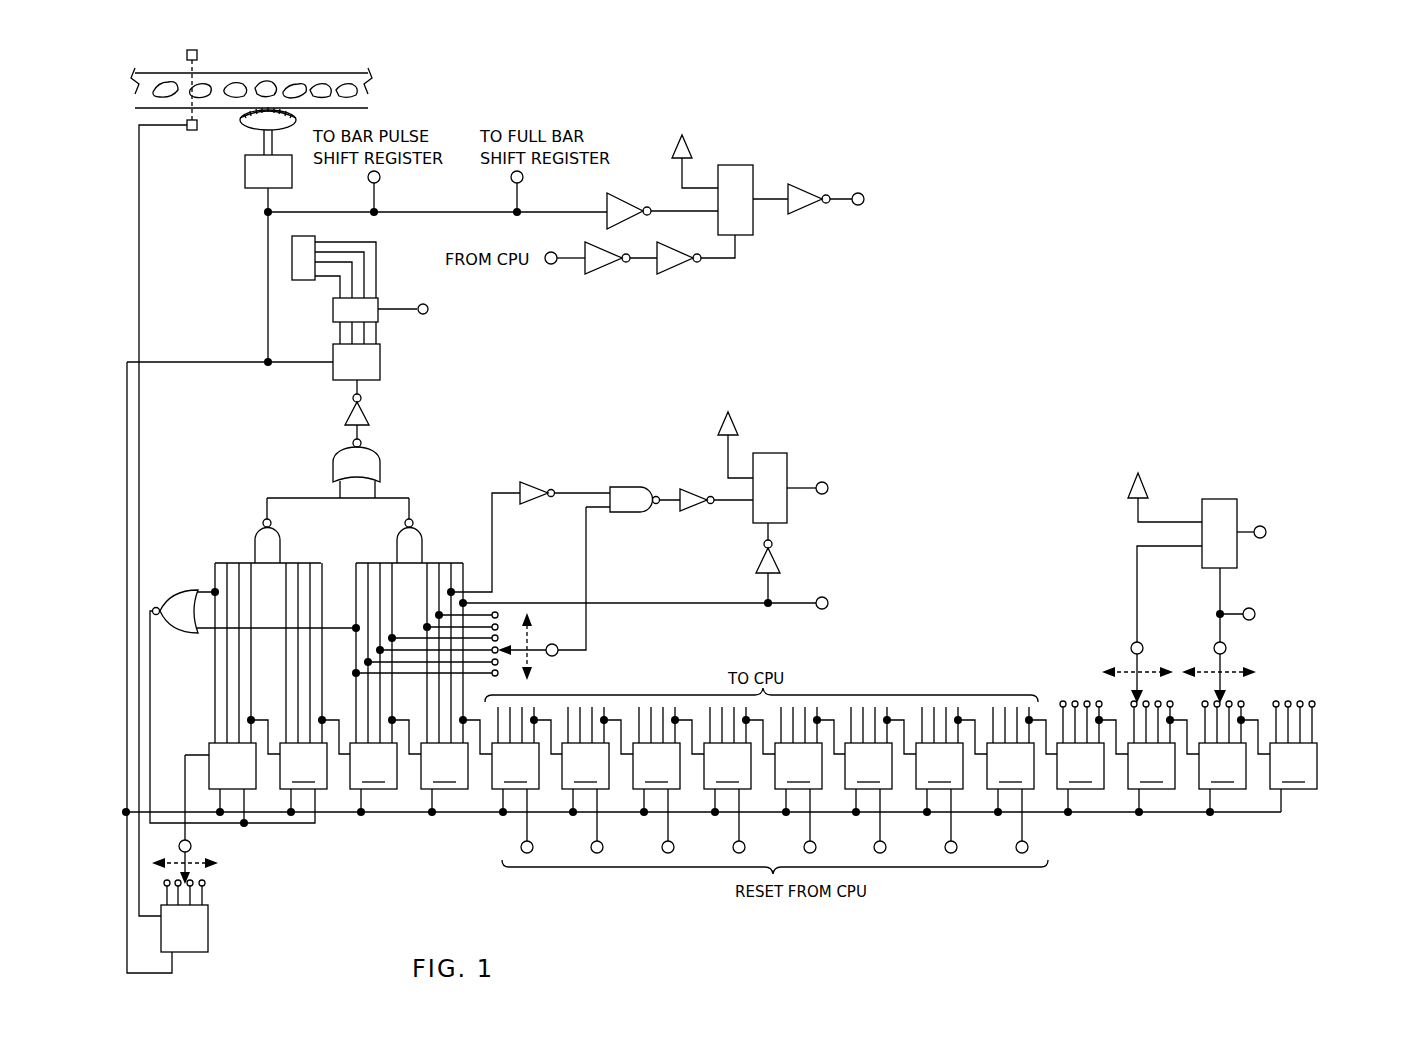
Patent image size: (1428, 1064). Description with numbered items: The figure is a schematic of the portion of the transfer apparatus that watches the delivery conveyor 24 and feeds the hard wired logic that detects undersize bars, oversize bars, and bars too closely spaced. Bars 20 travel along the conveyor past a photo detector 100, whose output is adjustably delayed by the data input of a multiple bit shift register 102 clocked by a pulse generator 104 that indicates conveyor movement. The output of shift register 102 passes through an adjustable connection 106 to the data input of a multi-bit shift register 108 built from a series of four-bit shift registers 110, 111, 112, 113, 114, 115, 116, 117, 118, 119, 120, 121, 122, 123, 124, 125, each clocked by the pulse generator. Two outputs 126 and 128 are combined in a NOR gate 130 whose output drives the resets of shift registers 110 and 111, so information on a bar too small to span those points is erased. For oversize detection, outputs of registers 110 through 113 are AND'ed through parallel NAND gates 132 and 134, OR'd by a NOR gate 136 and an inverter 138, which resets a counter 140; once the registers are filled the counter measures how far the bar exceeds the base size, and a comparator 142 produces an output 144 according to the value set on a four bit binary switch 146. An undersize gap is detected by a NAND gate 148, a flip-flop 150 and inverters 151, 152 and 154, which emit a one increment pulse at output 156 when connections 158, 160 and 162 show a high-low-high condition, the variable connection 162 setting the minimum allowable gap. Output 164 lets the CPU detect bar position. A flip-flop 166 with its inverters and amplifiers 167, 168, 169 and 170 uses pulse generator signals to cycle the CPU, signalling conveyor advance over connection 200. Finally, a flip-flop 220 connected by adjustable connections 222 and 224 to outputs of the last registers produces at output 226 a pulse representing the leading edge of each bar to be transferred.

The bars 20 is at (322, 85).
The delivery conveyor 24 is at (368, 73).
The photo detector 100 is at (194, 130).
The multiple bit shift register 102 is at (210, 928).
The pulse generator 104 is at (292, 178).
The adjustable connection 106 is at (191, 846).
The multi-bit shift register 108 is at (209, 748).
The 4 bit shift register 110 is at (247, 789).
The 4 bit shift register 111 is at (315, 766).
The 4 bit shift register 112 is at (385, 766).
The 4 bit shift register 113 is at (456, 766).
The 4 bit shift register 114 is at (527, 780).
The 4 bit shift register 115 is at (597, 780).
The 4 bit shift register 116 is at (668, 780).
The 4 bit shift register 117 is at (739, 780).
The 4 bit shift register 118 is at (810, 780).
The 4 bit shift register 119 is at (880, 780).
The 4 bit shift register 120 is at (951, 780).
The 4 bit shift register 121 is at (1022, 780).
The 4 bit shift register 122 is at (1092, 758).
The 4 bit shift register 123 is at (1163, 758).
The 4 bit shift register 124 is at (1234, 758).
The 4 bit shift register 125 is at (1293, 756).
The shift register output 126 is at (356, 626).
The shift register output 128 is at (202, 592).
The NOR gate 130 is at (157, 608).
The NAND gate 132 is at (281, 540).
The NAND gate 134 is at (423, 540).
The NOR gate 136 is at (375, 462).
The inverter 138 is at (369, 414).
The counter 140 is at (380, 362).
The comparator 142 is at (378, 309).
The comparator output 144 is at (417, 314).
The four bit binary switch 146 is at (315, 242).
The NAND gate 148 is at (622, 487).
The flip-flop 150 is at (790, 462).
The inverter 151 is at (535, 482).
The inverter 152 is at (694, 506).
The inverter 154 is at (780, 561).
The output 156 is at (820, 496).
The connection 158 is at (520, 603).
The connection 160 is at (494, 590).
The variable connection 162 is at (560, 652).
The output 164 is at (816, 609).
The flip-flop 166 is at (745, 165).
The inverter 167 is at (805, 190).
The inverter 168 is at (620, 200).
The inverter 169 is at (670, 248).
The inverter 170 is at (608, 248).
The connection 200 is at (855, 205).
The flip-flop 220 is at (1214, 499).
The adjustable connection 222 is at (1135, 640).
The adjustable connection 224 is at (1232, 612).
The output 226 is at (1251, 528).